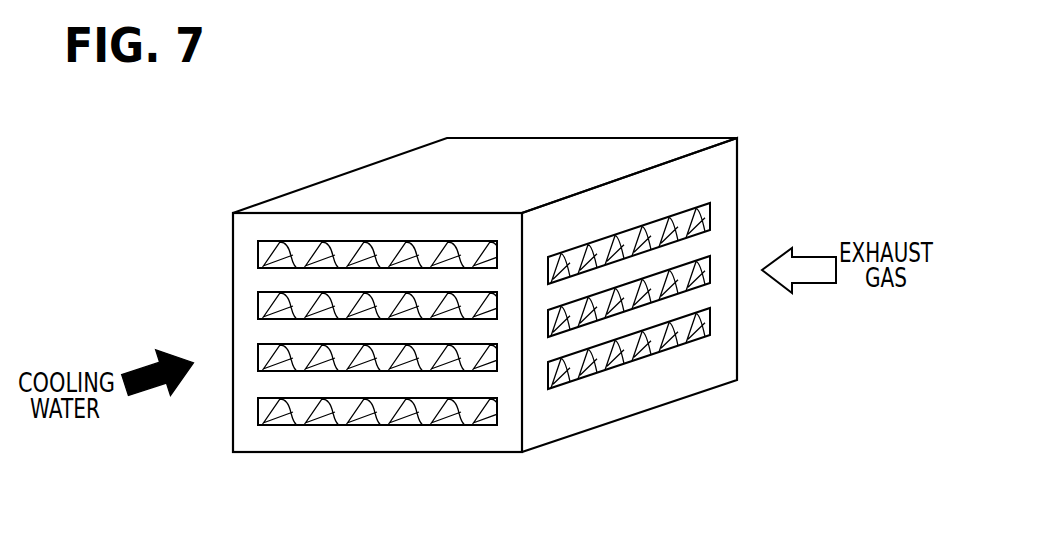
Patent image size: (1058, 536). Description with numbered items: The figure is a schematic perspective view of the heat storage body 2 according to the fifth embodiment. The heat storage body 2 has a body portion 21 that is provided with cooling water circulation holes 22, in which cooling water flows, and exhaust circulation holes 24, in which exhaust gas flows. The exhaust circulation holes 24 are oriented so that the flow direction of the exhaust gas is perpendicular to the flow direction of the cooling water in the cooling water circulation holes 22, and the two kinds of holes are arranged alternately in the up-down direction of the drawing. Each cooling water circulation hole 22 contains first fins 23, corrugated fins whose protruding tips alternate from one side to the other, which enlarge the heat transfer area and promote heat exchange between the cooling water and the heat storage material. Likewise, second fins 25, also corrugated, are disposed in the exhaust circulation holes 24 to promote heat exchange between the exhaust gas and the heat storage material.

The heat storage body 2 is at (623, 136).
The body portion 21 is at (469, 165).
The cooling water circulation holes 22 is at (407, 429).
The first fins 23 is at (298, 242).
The exhaust circulation holes 24 is at (627, 366).
The second fins 25 is at (693, 209).